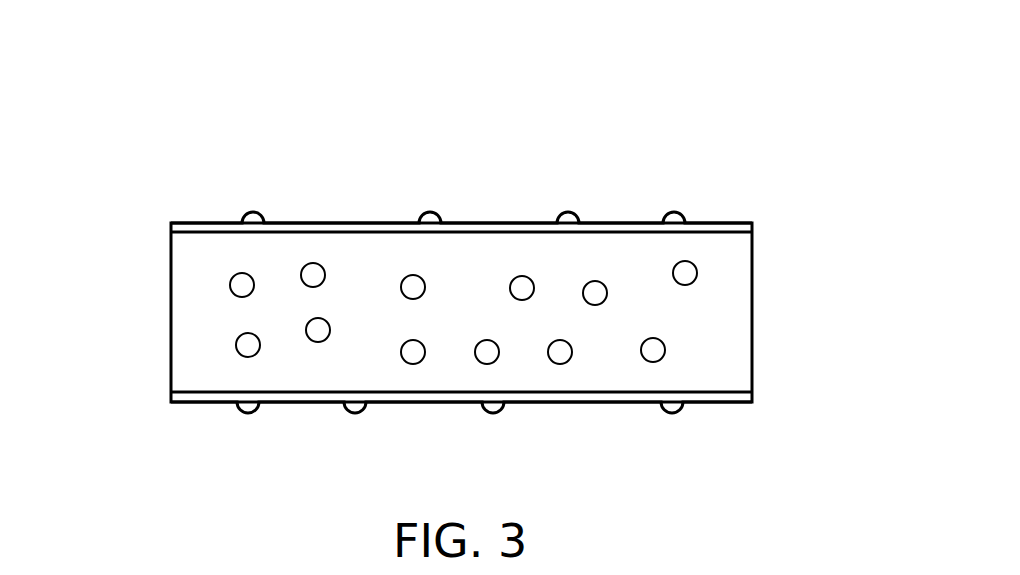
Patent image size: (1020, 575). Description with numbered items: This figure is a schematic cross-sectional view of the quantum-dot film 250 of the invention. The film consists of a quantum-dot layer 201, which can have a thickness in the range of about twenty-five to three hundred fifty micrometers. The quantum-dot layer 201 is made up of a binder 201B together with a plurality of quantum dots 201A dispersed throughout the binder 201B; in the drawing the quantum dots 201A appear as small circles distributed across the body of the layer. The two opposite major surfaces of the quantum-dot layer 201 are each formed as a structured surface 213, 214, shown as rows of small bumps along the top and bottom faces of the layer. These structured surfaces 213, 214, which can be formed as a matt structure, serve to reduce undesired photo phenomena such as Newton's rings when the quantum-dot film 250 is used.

The quantum-dot film 250 is at (436, 254).
The structured surface 213 is at (674, 212).
The structured surface 214 is at (672, 414).
The quantum-dot layer 201 is at (88, 362).
The quantum dots 201A is at (242, 281).
The binder 201B is at (217, 376).